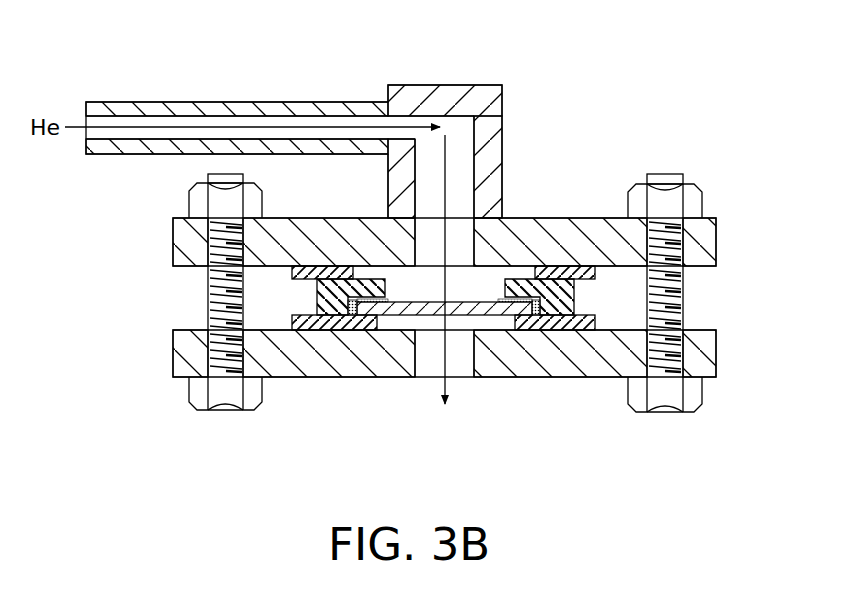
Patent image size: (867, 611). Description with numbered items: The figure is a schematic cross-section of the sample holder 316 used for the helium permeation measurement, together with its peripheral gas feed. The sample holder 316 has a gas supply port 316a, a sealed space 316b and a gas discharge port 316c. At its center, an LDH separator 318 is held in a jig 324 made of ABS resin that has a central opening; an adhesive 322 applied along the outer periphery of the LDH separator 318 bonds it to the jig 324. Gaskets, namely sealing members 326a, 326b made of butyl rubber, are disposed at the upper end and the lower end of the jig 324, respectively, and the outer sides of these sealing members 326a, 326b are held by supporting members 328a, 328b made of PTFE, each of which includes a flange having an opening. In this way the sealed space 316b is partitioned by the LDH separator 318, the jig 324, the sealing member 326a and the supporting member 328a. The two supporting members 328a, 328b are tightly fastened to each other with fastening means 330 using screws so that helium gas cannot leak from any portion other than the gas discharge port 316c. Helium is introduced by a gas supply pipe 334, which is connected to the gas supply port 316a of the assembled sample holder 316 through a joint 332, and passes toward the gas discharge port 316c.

The sample holder 316 is at (636, 88).
The gas supply port 316a is at (477, 250).
The sealed space 316b is at (413, 288).
The gas discharge port 316c is at (413, 365).
The LDH separator 318 is at (480, 300).
The adhesive 322 is at (537, 317).
The jig 324 is at (558, 295).
The sealing member 326a is at (595, 275).
The sealing member 326b is at (595, 317).
The supporting member 328a is at (703, 238).
The supporting member 328b is at (703, 352).
The fastening means 330 is at (663, 413).
The joint 332 is at (432, 97).
The gas supply pipe 334 is at (258, 110).